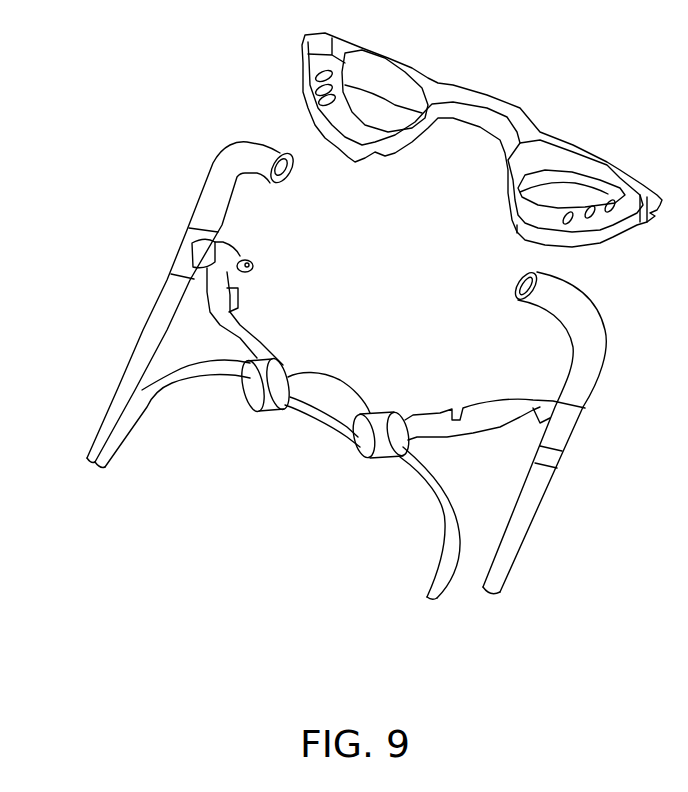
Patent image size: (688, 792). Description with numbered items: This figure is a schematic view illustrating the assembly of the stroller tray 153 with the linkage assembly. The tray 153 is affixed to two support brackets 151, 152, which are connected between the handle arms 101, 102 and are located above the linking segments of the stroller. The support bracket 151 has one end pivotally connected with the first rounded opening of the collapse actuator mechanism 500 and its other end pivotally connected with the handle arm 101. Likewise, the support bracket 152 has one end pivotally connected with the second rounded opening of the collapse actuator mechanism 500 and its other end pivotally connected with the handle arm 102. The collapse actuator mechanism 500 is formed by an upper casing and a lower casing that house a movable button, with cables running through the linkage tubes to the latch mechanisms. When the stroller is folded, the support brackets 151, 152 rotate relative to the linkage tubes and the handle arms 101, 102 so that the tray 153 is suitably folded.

The tray 153 is at (487, 113).
The support bracket 152 is at (233, 325).
The handle arm 102 is at (121, 391).
The collapse actuator mechanism 500 is at (313, 413).
The support bracket 151 is at (468, 428).
The handle arm 101 is at (503, 557).